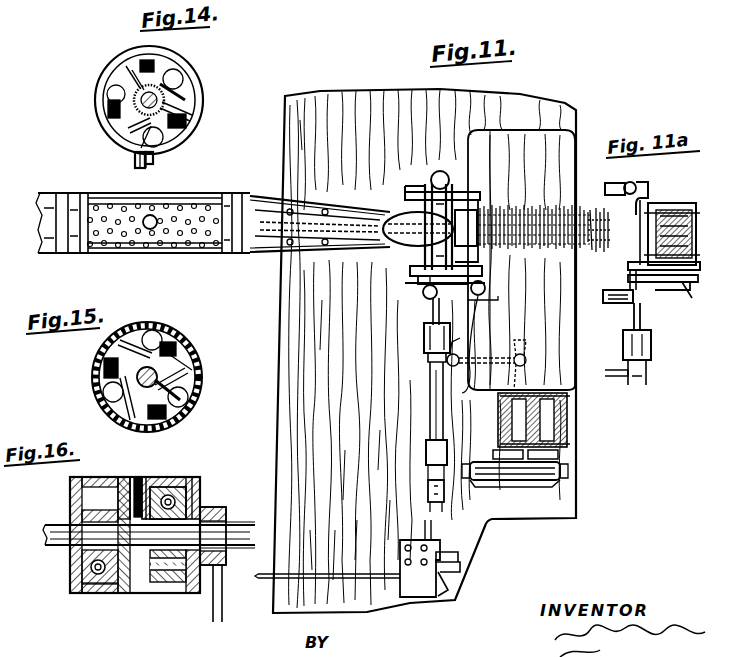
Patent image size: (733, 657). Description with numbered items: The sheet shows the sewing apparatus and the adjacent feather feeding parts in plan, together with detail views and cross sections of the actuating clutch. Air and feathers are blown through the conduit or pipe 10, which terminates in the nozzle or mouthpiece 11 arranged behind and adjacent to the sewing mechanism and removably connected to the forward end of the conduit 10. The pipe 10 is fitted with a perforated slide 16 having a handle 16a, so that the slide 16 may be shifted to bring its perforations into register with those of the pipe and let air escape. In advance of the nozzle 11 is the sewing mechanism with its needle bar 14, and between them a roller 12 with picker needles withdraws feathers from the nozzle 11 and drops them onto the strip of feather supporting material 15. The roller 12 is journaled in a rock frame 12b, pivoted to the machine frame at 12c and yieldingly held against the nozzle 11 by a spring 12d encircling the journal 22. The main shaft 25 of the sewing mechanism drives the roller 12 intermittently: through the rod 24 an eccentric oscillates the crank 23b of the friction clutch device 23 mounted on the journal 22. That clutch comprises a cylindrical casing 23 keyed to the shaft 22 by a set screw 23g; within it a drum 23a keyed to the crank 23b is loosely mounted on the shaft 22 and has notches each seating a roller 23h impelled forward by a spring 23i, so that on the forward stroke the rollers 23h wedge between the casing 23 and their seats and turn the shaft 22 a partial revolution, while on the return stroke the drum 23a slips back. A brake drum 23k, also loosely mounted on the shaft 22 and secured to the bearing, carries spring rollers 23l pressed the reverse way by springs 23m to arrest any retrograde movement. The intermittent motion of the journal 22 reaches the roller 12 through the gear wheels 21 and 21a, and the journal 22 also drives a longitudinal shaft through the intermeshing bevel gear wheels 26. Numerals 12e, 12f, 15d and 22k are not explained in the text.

In FIG. 14, the conduit or pipe 10 is at (40, 214).
In FIG. 11, the nozzle or mouthpiece 11 is at (355, 218).
In FIG. 11, the roller 12 is at (482, 212).
In FIG. 11A, the roller 12 is at (678, 202).
In FIG. 11, the rock frame 12b is at (460, 194).
In FIG. 11A, the rock frame 12b is at (655, 200).
In FIG. 11, the pivot 12c is at (440, 170).
In FIG. 11A, the pivot 12c is at (628, 277).
In FIG. 11, the spring 12d is at (410, 195).
In FIG. 11A, the spring 12d is at (632, 264).
In FIG. 11, the lower bar 12e is at (410, 270).
In FIG. 11, the rod 12f is at (310, 573).
In FIG. 16, the needle bar 14 is at (180, 474).
In FIG. 16, the strip of feather supporting material 15 is at (116, 472).
In FIG. 11, the brush end 15d is at (533, 228).
In FIG. 11A, the brush end 15d is at (602, 230).
In FIG. 14, the perforated slide 16 is at (113, 163).
In FIG. 14, the handle 16a is at (153, 216).
In FIG. 11, the gear wheel 21 is at (422, 285).
In FIG. 11A, the gear wheel 21 is at (615, 303).
In FIG. 11, the gear wheel 21a is at (490, 282).
In FIG. 11A, the gear wheel 21a is at (690, 297).
In FIG. 14, the journal or shaft 22 is at (165, 102).
In FIG. 11, the journal or shaft 22 is at (436, 310).
In FIG. 11A, the journal or shaft 22 is at (641, 320).
In FIG. 15, the journal or shaft 22 is at (166, 380).
In FIG. 16, the journal or shaft 22 is at (52, 546).
In FIG. 15, the hub 22k is at (132, 326).
In FIG. 14, the friction clutch device 23 is at (182, 72).
In FIG. 11, the friction clutch device 23 is at (424, 336).
In FIG. 11A, the friction clutch device 23 is at (623, 346).
In FIG. 15, the friction clutch device 23 is at (168, 340).
In FIG. 16, the friction clutch device 23 is at (165, 478).
In FIG. 14, the drum 23a is at (190, 110).
In FIG. 16, the drum 23a is at (210, 506).
In FIG. 14, the crank 23b is at (160, 163).
In FIG. 11, the crank 23b is at (474, 348).
In FIG. 16, the crank 23b is at (224, 596).
In FIG. 16, the set screw 23g is at (148, 476).
In FIG. 14, the roller 23h is at (196, 80).
In FIG. 14, the spring 23i is at (142, 62).
In FIG. 15, the brake drum 23k is at (174, 366).
In FIG. 16, the brake drum 23k is at (82, 593).
In FIG. 15, the spring rollers 23l is at (156, 330).
In FIG. 16, the spring rollers 23l is at (70, 492).
In FIG. 15, the springs 23m is at (184, 342).
In FIG. 11, the rod 24 is at (468, 352).
In FIG. 11, the main shaft 25 is at (526, 348).
In FIG. 11, the bevel gear wheels 26 is at (432, 590).